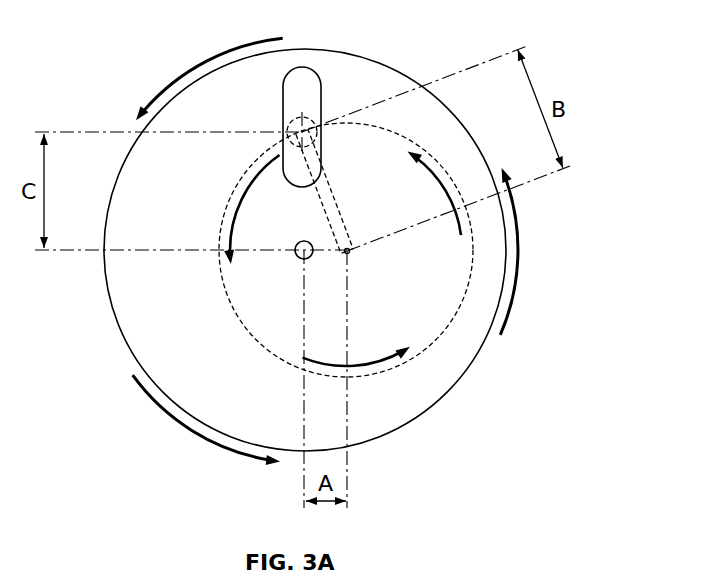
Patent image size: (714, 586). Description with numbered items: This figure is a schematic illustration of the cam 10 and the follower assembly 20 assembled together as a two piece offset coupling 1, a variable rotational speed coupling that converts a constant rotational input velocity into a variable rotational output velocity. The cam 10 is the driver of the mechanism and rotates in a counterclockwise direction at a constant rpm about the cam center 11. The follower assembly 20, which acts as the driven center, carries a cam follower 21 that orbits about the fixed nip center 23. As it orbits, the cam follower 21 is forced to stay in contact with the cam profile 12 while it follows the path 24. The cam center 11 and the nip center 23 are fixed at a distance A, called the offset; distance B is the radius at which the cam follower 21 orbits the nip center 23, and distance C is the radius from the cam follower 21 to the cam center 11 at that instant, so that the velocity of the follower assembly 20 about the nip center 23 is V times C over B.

The offset coupling 1 is at (92, 114).
The cam 10 is at (106, 301).
The cam center 11 is at (298, 256).
The cam profile 12 is at (310, 64).
The follower assembly 20 is at (417, 360).
The cam follower 21 is at (304, 116).
The nip center 23 is at (348, 253).
The path 24 is at (226, 296).